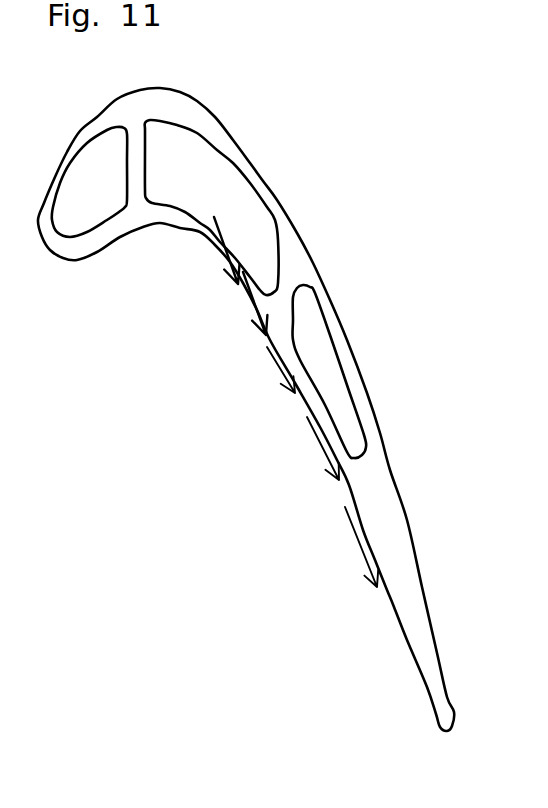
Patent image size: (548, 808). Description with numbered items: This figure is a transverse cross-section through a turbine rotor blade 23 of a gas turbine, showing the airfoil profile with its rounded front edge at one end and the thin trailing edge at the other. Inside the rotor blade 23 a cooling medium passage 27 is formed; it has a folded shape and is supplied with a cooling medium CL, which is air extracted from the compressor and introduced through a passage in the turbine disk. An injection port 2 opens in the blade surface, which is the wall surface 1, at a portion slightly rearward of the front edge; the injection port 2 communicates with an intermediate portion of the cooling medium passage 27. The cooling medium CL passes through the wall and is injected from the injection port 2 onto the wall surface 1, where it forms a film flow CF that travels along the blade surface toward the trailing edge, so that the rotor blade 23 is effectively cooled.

The rotor blade 23 is at (200, 103).
The cooling medium passage 27 is at (233, 188).
The injection port 2 is at (240, 283).
The wall surface 1 is at (350, 488).
The cooling medium CL is at (236, 275).
The film flow CF is at (327, 438).